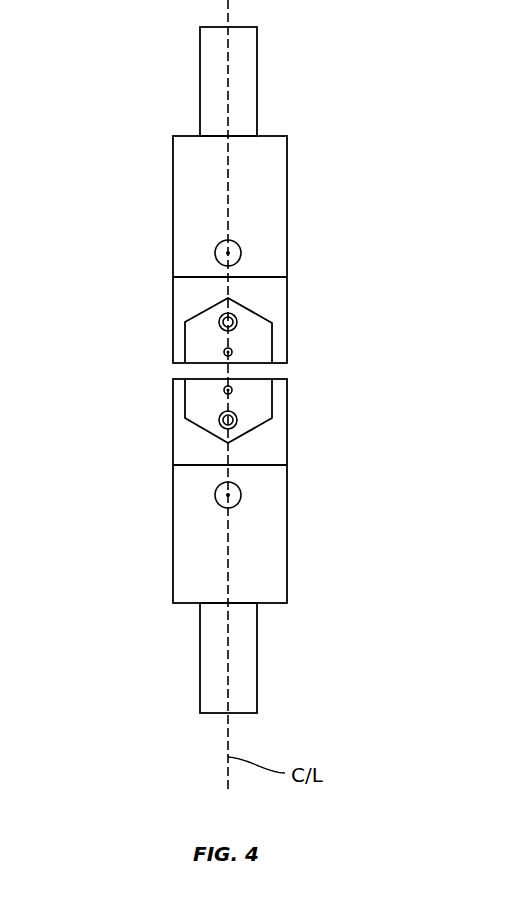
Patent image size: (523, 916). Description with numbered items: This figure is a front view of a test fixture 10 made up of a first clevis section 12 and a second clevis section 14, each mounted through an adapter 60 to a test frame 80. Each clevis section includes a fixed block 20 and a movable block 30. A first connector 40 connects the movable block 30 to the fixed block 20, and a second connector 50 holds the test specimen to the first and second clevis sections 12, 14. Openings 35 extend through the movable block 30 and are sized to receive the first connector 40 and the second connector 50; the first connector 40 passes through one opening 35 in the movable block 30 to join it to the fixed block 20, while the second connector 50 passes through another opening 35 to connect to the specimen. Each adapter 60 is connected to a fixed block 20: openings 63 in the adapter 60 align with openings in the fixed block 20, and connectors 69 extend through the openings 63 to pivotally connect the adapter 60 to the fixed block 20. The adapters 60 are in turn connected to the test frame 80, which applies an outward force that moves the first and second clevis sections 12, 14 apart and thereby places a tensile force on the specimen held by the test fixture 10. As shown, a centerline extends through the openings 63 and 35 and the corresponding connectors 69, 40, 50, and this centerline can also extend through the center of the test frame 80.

The test fixture 10 is at (418, 302).
The first clevis section 12 is at (112, 255).
The second clevis section 14 is at (149, 426).
The fixed block 20 is at (268, 293).
The movable block 30 is at (253, 342).
The openings 35 is at (220, 327).
The first connector 40 is at (219, 320).
The second connector 50 is at (224, 353).
The adapter 60 is at (267, 163).
The openings 63 is at (236, 242).
The connectors 69 is at (233, 255).
The test frame 80 is at (247, 67).